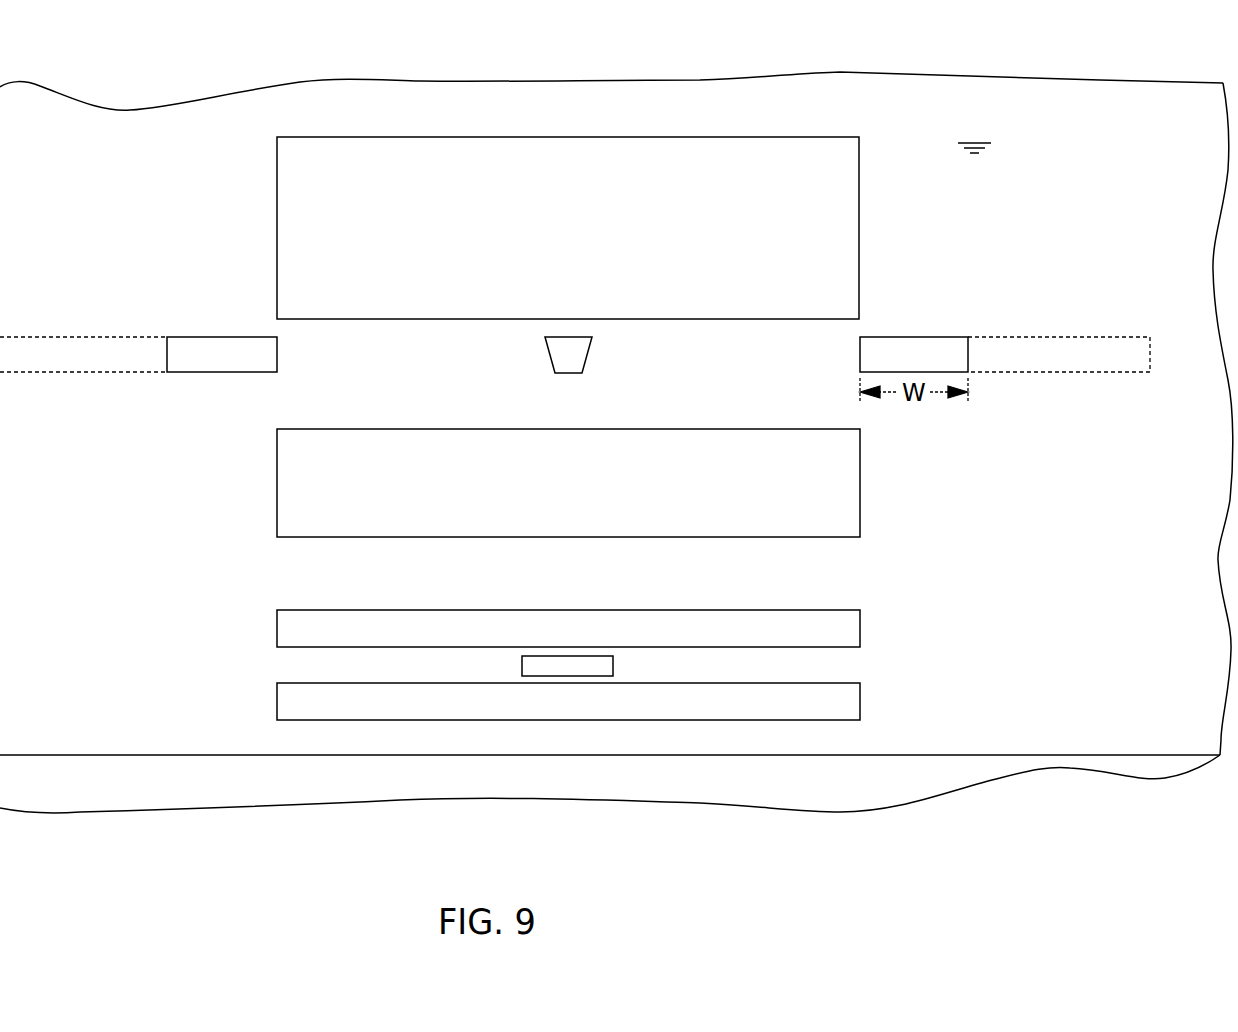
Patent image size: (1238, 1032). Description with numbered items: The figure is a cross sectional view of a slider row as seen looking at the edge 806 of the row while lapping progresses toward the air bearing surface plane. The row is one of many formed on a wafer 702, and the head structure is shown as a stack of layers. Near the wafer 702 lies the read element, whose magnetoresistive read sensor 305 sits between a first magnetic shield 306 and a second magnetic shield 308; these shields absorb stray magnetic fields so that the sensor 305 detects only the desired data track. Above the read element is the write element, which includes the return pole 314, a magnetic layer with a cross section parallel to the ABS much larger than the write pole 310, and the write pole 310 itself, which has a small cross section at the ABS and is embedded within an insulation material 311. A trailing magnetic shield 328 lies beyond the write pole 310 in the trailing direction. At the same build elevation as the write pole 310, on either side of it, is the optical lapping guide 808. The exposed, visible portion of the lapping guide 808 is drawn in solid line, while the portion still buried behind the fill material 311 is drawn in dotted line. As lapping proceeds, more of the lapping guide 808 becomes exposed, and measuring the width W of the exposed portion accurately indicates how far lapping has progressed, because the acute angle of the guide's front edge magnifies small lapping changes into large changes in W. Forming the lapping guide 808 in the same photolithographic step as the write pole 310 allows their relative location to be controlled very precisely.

The magnetoresistive read sensor 305 is at (606, 664).
The first magnetic shield 306 is at (604, 702).
The second magnetic shield 308 is at (604, 629).
The write pole 310 is at (578, 357).
The insulation material 311 is at (1064, 462).
The return pole 314 is at (607, 483).
The trailing magnetic shield 328 is at (603, 241).
The wafer 702 is at (943, 780).
The edge of the slider row 806 is at (982, 140).
The optical lapping guide 808 is at (157, 337).